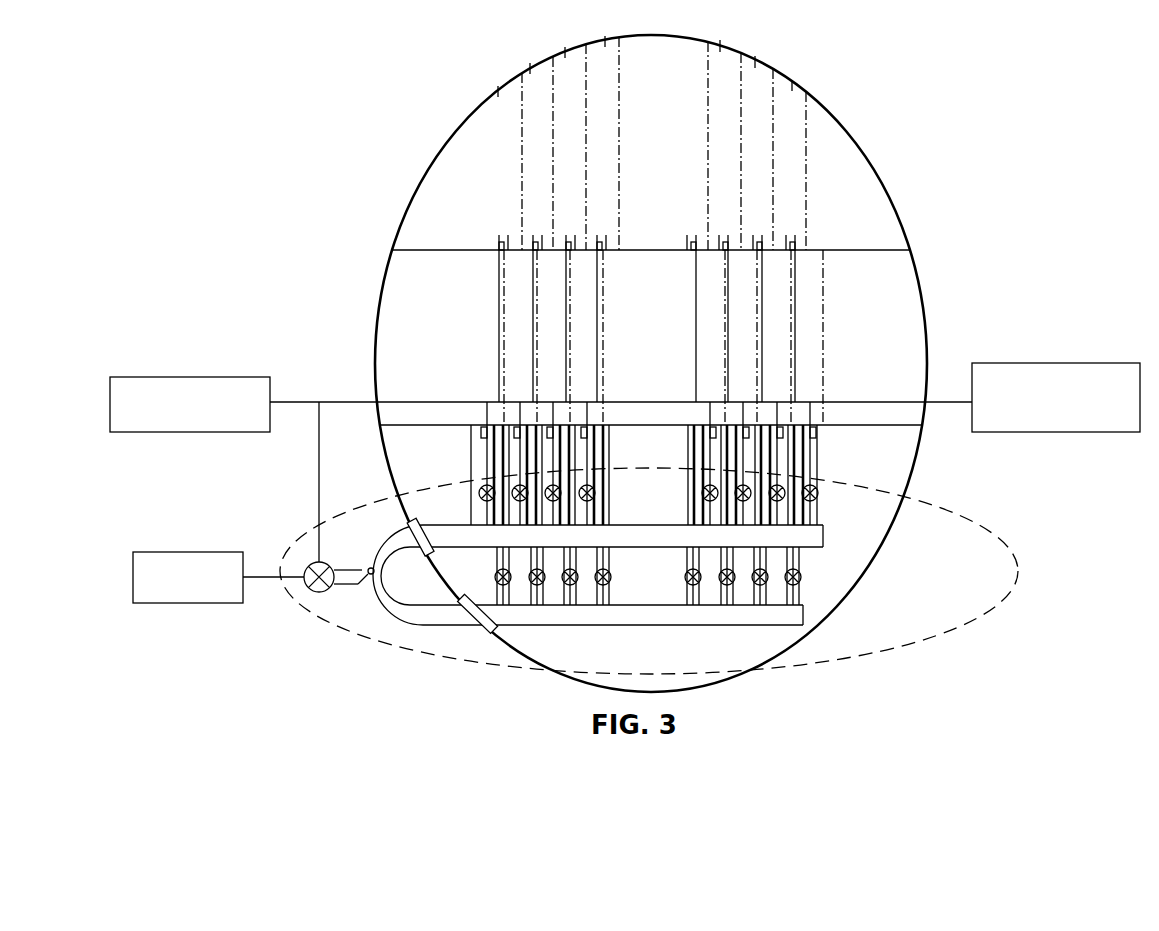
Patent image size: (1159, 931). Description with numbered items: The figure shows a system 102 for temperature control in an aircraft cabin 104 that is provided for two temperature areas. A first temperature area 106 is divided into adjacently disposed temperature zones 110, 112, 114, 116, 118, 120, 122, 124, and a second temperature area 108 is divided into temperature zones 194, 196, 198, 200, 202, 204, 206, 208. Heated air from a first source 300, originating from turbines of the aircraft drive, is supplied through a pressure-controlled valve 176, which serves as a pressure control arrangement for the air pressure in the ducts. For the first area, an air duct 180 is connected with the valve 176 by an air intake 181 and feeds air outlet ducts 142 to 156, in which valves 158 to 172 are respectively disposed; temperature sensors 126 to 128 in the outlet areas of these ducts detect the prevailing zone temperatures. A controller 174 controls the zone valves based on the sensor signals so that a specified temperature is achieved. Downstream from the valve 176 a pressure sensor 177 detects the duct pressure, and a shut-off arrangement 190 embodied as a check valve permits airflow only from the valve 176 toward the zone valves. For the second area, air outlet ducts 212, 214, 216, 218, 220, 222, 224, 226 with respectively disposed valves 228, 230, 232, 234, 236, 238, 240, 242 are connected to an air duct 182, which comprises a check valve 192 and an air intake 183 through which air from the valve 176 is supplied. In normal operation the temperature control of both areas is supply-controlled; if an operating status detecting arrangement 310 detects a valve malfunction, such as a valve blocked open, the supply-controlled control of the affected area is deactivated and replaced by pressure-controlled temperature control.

The system 102 is at (945, 510).
The aircraft cabin 104 is at (835, 137).
The temperature area 106 is at (404, 307).
The temperature area 108 is at (850, 175).
The temperature zone 110 is at (421, 327).
The temperature zone 112 is at (515, 293).
The temperature zone 114 is at (545, 268).
The temperature zone 116 is at (580, 283).
The temperature zone 118 is at (636, 330).
The temperature zone 120 is at (742, 293).
The temperature zone 122 is at (773, 268).
The temperature zone 124 is at (810, 281).
The temperature sensor 126 is at (481, 433).
The temperature sensor 128 is at (816, 442).
The air outlet duct 142 is at (492, 465).
The air outlet duct 156 is at (805, 470).
The valve 158 is at (478, 496).
The valve 172 is at (818, 496).
The controller 174 is at (187, 376).
The pressure-controlled valve 176 is at (306, 593).
The pressure sensor 177 is at (356, 592).
The air duct 180 is at (678, 538).
The air intake 181 is at (403, 528).
The air duct 182 is at (753, 626).
The air intake 183 is at (431, 619).
The shut-off arrangement 190 is at (411, 529).
The check valve 192 is at (472, 622).
The temperature zone 194 is at (498, 90).
The temperature zone 196 is at (530, 66).
The temperature zone 198 is at (565, 50).
The temperature zone 200 is at (605, 38).
The temperature zone 202 is at (650, 106).
The temperature zone 204 is at (720, 44).
The temperature zone 206 is at (755, 60).
The temperature zone 208 is at (792, 84).
The air outlet duct 212 is at (497, 559).
The air outlet duct 214 is at (513, 630).
The air outlet duct 216 is at (566, 558).
The air outlet duct 218 is at (609, 560).
The air outlet duct 220 is at (688, 508).
The air outlet duct 222 is at (721, 448).
The air outlet duct 224 is at (766, 557).
The air outlet duct 226 is at (803, 600).
The valve 228 is at (495, 577).
The valve 230 is at (533, 585).
The valve 232 is at (568, 585).
The valve 234 is at (601, 585).
The valve 236 is at (688, 585).
The valve 238 is at (723, 585).
The valve 240 is at (768, 584).
The valve 242 is at (802, 578).
The first source of heated air 300 is at (188, 551).
The operating status detecting arrangement 310 is at (1055, 362).